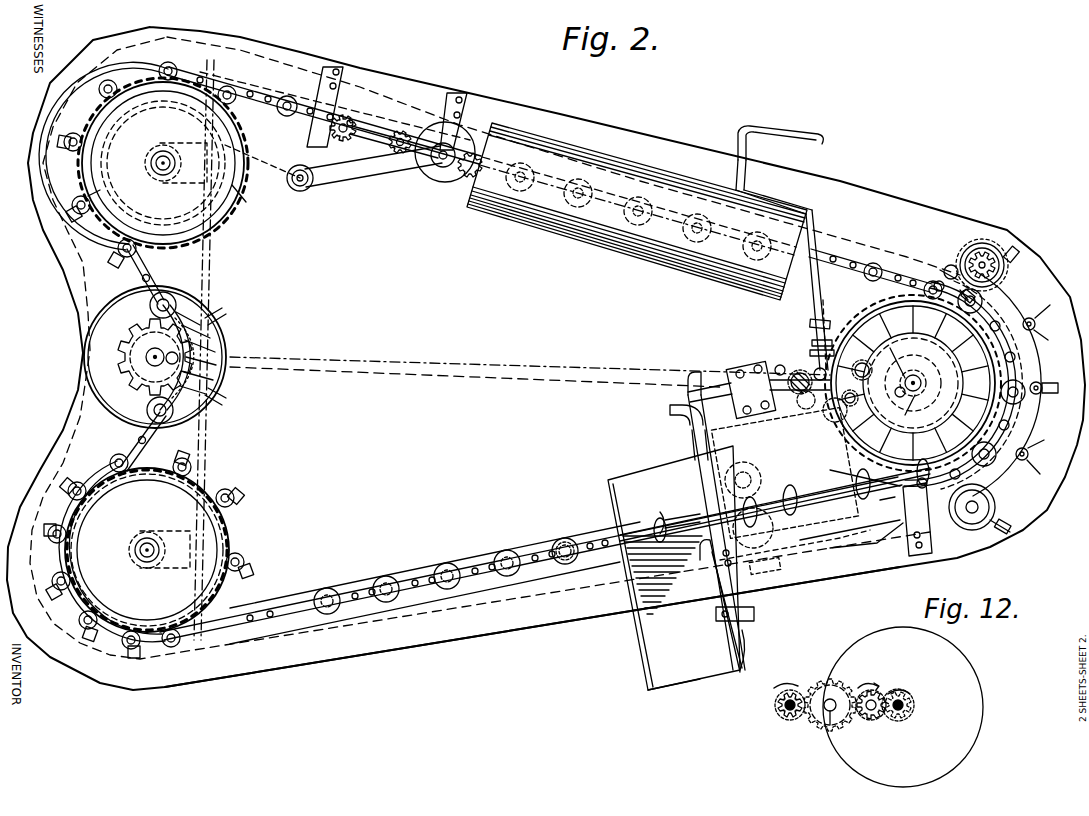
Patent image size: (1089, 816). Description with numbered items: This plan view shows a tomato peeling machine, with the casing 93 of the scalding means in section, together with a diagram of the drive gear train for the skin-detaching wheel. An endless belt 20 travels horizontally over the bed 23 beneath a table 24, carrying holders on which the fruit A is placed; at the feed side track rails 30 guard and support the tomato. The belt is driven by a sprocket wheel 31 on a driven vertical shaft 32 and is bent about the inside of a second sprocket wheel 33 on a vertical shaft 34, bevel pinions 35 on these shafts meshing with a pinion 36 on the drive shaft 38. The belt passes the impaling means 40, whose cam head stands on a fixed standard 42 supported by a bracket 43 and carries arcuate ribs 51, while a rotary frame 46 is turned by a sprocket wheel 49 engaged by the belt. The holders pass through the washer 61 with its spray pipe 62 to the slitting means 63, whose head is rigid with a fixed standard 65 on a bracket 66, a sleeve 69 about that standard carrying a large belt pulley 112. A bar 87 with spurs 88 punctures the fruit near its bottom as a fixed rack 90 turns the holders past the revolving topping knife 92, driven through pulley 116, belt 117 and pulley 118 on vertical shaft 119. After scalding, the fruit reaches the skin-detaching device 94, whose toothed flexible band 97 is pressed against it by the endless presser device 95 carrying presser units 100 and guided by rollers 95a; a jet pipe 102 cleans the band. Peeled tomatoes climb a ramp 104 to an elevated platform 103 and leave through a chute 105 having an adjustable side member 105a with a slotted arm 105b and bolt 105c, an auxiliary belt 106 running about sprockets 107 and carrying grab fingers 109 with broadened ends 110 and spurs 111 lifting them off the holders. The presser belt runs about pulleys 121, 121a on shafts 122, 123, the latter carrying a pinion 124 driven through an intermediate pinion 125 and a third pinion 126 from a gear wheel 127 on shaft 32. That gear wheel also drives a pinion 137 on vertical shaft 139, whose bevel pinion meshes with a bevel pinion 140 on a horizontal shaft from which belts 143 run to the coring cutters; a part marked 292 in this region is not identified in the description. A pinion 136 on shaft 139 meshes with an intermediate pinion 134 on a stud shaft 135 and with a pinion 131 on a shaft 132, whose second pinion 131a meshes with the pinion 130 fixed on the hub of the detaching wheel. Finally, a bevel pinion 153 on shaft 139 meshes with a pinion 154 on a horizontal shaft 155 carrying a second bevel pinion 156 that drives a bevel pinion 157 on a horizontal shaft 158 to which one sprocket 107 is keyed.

In FIG. 2, the endless belt 20 is at (296, 612).
In FIG. 2, the bed 23 is at (505, 595).
In FIG. 2, the table 24 is at (492, 622).
In FIG. 2, the track rails 30 is at (356, 590).
In FIG. 2, the sprocket wheel 31 is at (838, 455).
In FIG. 2, the driven vertical shaft 32 is at (915, 400).
In FIG. 12, the driven vertical shaft 32 is at (902, 712).
In FIG. 2, the second sprocket wheel 33 is at (145, 357).
In FIG. 2, the vertical shaft 34 is at (145, 360).
In FIG. 2, the bevel pinions 35 is at (925, 376).
In FIG. 2, the pinion 36 is at (905, 370).
In FIG. 2, the drive shaft 38 is at (452, 364).
In FIG. 2, the impaling means 40 is at (156, 550).
In FIG. 2, the fixed standard 42 is at (143, 562).
In FIG. 2, the bracket 43 is at (172, 538).
In FIG. 2, the rotary frame 46 is at (190, 152).
In FIG. 2, the sprocket wheel 49 is at (242, 547).
In FIG. 2, the arcuate ribs 51 is at (130, 553).
In FIG. 2, the washer 61 is at (222, 347).
In FIG. 2, the spray pipe 62 is at (205, 312).
In FIG. 2, the slitting means 63 is at (236, 212).
In FIG. 2, the fixed standard 65 is at (165, 175).
In FIG. 2, the bracket 66 is at (162, 348).
In FIG. 2, the sleeve or hollow shaft 69 is at (152, 170).
In FIG. 2, the bar 87 is at (368, 110).
In FIG. 2, the teeth or spurs 88 is at (343, 135).
In FIG. 2, the fixed rack 90 is at (380, 146).
In FIG. 2, the revolving topping knife 92 is at (435, 175).
In FIG. 2, the casing 93 is at (572, 226).
In FIG. 2, the skin-detaching device 94 is at (899, 332).
In FIG. 2, the endless traveling presser device 95 is at (1040, 370).
In FIG. 2, the guide rollers 95a is at (1040, 330).
In FIG. 2, the flexible annular band 97 is at (834, 330).
In FIG. 2, the presser units 100 is at (1058, 390).
In FIG. 2, the jet pipe 102 is at (812, 286).
In FIG. 2, the elevated platform 103 is at (778, 535).
In FIG. 2, the ramp 104 is at (866, 519).
In FIG. 2, the chute 105 is at (674, 568).
In FIG. 2, the adjustable side member 105a is at (705, 660).
In FIG. 2, the slotted arm 105b is at (744, 618).
In FIG. 2, the bolt 105c is at (735, 652).
In FIG. 2, the auxiliary carrying and detaching belt 106 is at (775, 495).
In FIG. 2, the sprockets 107 is at (700, 520).
In FIG. 2, the grab fingers 109 is at (672, 517).
In FIG. 2, the ends 110 is at (658, 515).
In FIG. 2, the spurs 111 is at (700, 520).
In FIG. 2, the belt pulley 112 is at (150, 113).
In FIG. 2, the pulley 116 is at (300, 192).
In FIG. 2, the belt 117 is at (370, 168).
In FIG. 2, the pulley 118 is at (460, 172).
In FIG. 2, the vertical shaft 119 is at (405, 152).
In FIG. 2, the pulley 121 is at (985, 498).
In FIG. 2, the pulley 121a is at (1008, 270).
In FIG. 2, the vertical shaft 122 is at (968, 514).
In FIG. 2, the vertical shaft 123 is at (985, 255).
In FIG. 2, the pinion 124 is at (970, 252).
In FIG. 2, the intermediate pinion 125 is at (990, 295).
In FIG. 2, the third pinion 126 is at (945, 268).
In FIG. 2, the gear wheel 127 is at (812, 345).
In FIG. 2, the pinion 130 is at (927, 387).
In FIG. 12, the pinion 130 is at (915, 707).
In FIG. 12, the pinion 131 is at (866, 718).
In FIG. 2, the second pinion 131a is at (898, 385).
In FIG. 12, the second pinion 131a is at (880, 722).
In FIG. 12, the shaft 132 is at (866, 692).
In FIG. 12, the intermediate pinion 134 is at (815, 735).
In FIG. 2, the stud shaft 135 is at (856, 370).
In FIG. 12, the stud shaft 135 is at (835, 726).
In FIG. 2, the pinion 136 is at (830, 422).
In FIG. 12, the pinion 136 is at (785, 712).
In FIG. 2, the pinion 137 is at (760, 358).
In FIG. 2, the vertical shaft 139 is at (790, 372).
In FIG. 12, the vertical shaft 139 is at (780, 705).
In FIG. 2, the bevel pinion 140 is at (784, 473).
In FIG. 2, the belts 143 is at (780, 468).
In FIG. 2, the bevel pinion 153 is at (815, 368).
In FIG. 2, the bevel pinion 154 is at (800, 390).
In FIG. 2, the horizontal shaft 155 is at (728, 386).
In FIG. 2, the second bevel pinion 156 is at (686, 398).
In FIG. 2, the bevel pinion 157 is at (670, 412).
In FIG. 2, the horizontal shaft 158 is at (692, 450).
In FIG. 2, the wheel 292 is at (770, 522).
In FIG. 2, the fruit A is at (565, 540).